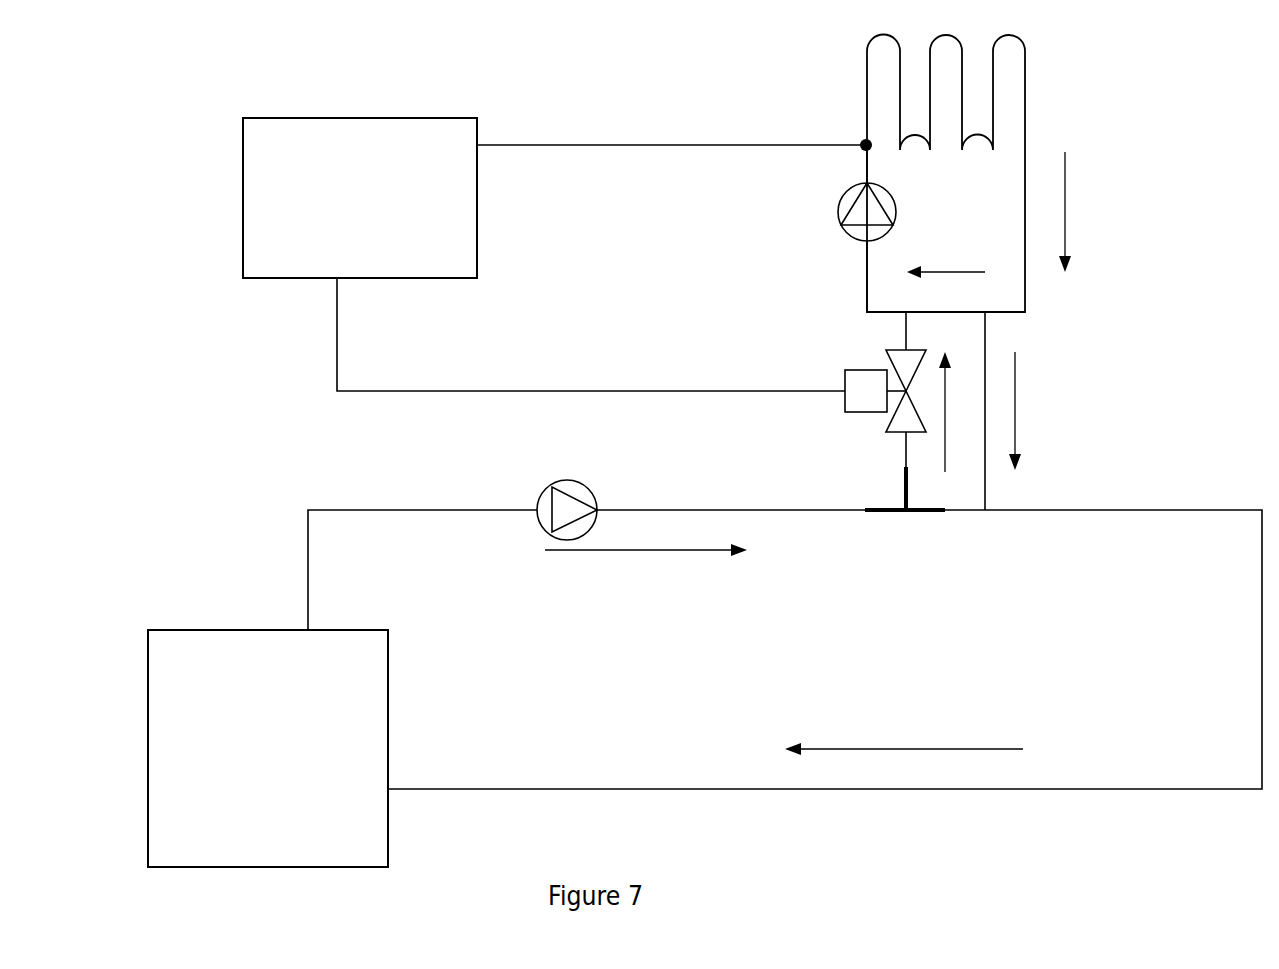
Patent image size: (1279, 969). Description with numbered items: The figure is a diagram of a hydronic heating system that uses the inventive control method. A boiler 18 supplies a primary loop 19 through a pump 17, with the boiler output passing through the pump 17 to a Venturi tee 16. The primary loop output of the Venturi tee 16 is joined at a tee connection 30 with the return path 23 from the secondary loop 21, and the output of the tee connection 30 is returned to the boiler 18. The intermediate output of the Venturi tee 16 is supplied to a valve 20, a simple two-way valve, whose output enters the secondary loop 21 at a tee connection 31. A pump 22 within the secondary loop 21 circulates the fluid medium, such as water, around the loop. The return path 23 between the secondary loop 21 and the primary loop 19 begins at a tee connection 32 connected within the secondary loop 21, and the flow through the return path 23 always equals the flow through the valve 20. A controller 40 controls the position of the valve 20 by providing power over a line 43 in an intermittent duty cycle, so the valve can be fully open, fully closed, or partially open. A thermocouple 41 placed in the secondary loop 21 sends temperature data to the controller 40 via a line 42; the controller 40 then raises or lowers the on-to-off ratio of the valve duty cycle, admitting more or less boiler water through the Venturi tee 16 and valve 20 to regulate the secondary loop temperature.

The Venturi tee 16 is at (901, 459).
The pump 17 is at (567, 487).
The boiler 18 is at (268, 719).
The primary loop 19 is at (785, 649).
The valve 20 is at (864, 397).
The secondary loop 21 is at (969, 174).
The pump 22 is at (834, 231).
The return path 23 is at (1023, 411).
The tee connection 30 is at (1011, 453).
The tee connection 31 is at (887, 330).
The tee connection 32 is at (1005, 332).
The controller 40 is at (360, 178).
The thermocouple 41 is at (853, 135).
The line 42 is at (671, 129).
The line 43 is at (591, 334).